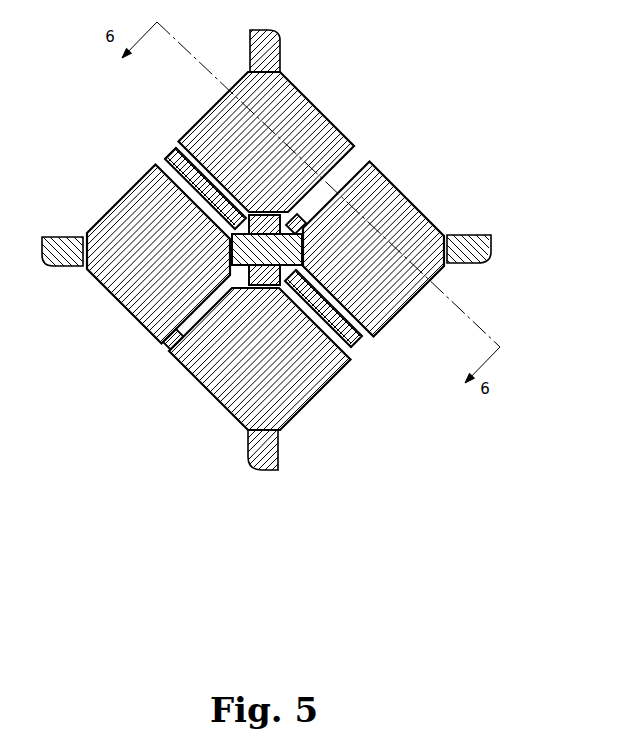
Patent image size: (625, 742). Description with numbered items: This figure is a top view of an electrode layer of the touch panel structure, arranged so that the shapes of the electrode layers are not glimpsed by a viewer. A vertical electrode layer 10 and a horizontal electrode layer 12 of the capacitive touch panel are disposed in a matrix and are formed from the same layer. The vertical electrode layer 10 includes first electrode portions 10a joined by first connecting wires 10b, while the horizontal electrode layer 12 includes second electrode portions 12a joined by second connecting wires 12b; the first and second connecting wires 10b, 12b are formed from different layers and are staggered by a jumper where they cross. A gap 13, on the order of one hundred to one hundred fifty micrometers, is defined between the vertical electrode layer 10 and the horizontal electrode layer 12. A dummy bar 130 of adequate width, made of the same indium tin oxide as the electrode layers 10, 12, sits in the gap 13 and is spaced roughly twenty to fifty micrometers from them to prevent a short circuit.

The vertical electrode layer 10 is at (361, 171).
The first electrode portions 10a is at (295, 138).
The first connecting wires 10b is at (291, 212).
The horizontal electrode layer 12 is at (187, 342).
The second electrode portions 12a is at (137, 285).
The second connecting wires 12b is at (240, 267).
The gap 13 is at (183, 153).
The dummy bar 130 is at (169, 156).